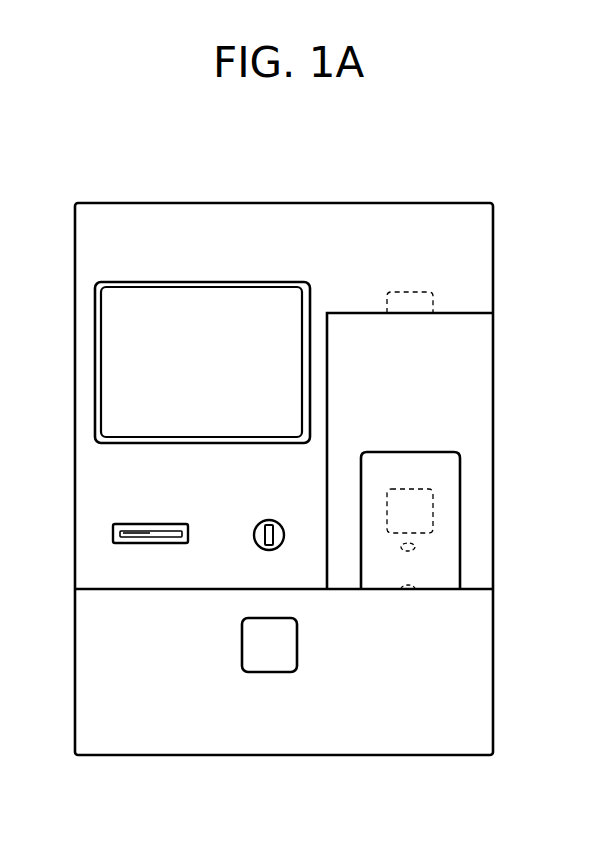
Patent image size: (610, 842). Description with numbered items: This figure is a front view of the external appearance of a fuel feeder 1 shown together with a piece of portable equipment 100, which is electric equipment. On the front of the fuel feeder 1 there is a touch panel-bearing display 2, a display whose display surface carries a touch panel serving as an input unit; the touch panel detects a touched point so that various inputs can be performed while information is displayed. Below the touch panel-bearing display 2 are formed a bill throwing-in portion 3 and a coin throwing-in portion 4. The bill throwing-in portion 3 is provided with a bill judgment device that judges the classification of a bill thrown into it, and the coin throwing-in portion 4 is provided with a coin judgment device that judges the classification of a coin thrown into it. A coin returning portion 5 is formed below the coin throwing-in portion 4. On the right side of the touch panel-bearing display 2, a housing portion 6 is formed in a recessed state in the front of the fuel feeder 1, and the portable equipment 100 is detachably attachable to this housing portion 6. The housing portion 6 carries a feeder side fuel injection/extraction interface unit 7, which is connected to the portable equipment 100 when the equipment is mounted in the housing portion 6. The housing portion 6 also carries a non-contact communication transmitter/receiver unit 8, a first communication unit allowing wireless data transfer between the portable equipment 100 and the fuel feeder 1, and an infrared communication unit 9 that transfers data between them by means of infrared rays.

The fuel feeder 1 is at (496, 193).
The touch panel-bearing display 2 is at (110, 347).
The bill throwing-in portion 3 is at (120, 530).
The coin throwing-in portion 4 is at (255, 545).
The coin returning portion 5 is at (271, 665).
The housing portion 6 is at (478, 343).
The feeder side fuel injection/extraction interface unit 7 is at (418, 587).
The non-contact communication transmitter/receiver unit 8 is at (433, 489).
The infrared communication unit 9 is at (428, 297).
The portable equipment 100 is at (470, 511).